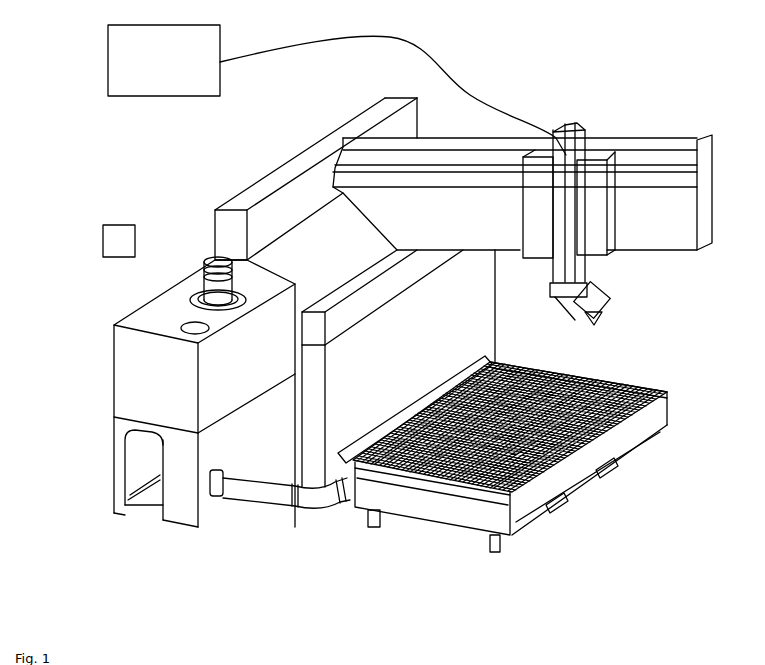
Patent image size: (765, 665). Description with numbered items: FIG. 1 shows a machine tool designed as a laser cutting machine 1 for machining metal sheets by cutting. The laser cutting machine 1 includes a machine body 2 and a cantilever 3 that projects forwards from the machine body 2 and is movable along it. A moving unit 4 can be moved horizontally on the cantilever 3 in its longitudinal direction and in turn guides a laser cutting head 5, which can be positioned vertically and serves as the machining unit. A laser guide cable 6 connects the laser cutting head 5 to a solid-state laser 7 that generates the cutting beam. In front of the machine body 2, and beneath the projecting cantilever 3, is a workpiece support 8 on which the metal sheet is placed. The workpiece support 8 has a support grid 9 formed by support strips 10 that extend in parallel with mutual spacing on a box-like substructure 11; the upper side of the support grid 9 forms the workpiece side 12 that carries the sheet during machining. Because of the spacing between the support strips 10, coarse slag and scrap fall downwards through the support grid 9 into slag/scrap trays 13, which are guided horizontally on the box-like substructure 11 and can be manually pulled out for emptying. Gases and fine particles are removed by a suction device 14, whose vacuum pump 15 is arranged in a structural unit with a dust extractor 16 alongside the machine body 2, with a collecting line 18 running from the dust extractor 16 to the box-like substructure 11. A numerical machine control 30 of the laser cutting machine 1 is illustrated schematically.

The laser cutting machine 1 is at (176, 184).
The machine body 2 is at (410, 346).
The cantilever 3 is at (465, 224).
The moving unit 4 is at (597, 215).
The laser cutting head 5 is at (602, 296).
The laser guide cable 6 is at (430, 63).
The solid-state laser 7 is at (169, 67).
The workpiece support 8 is at (535, 460).
The support grid 9 is at (485, 472).
The support strips 10 is at (428, 472).
The box-like substructure 11 is at (679, 432).
The workpiece side 12 is at (585, 395).
The slag/scrap trays 13 is at (612, 474).
The suction device 14 is at (204, 414).
The vacuum pump 15 is at (145, 386).
The dust extractor 16 is at (174, 386).
The collecting line 18 is at (283, 502).
The numerical machine control 30 is at (128, 248).